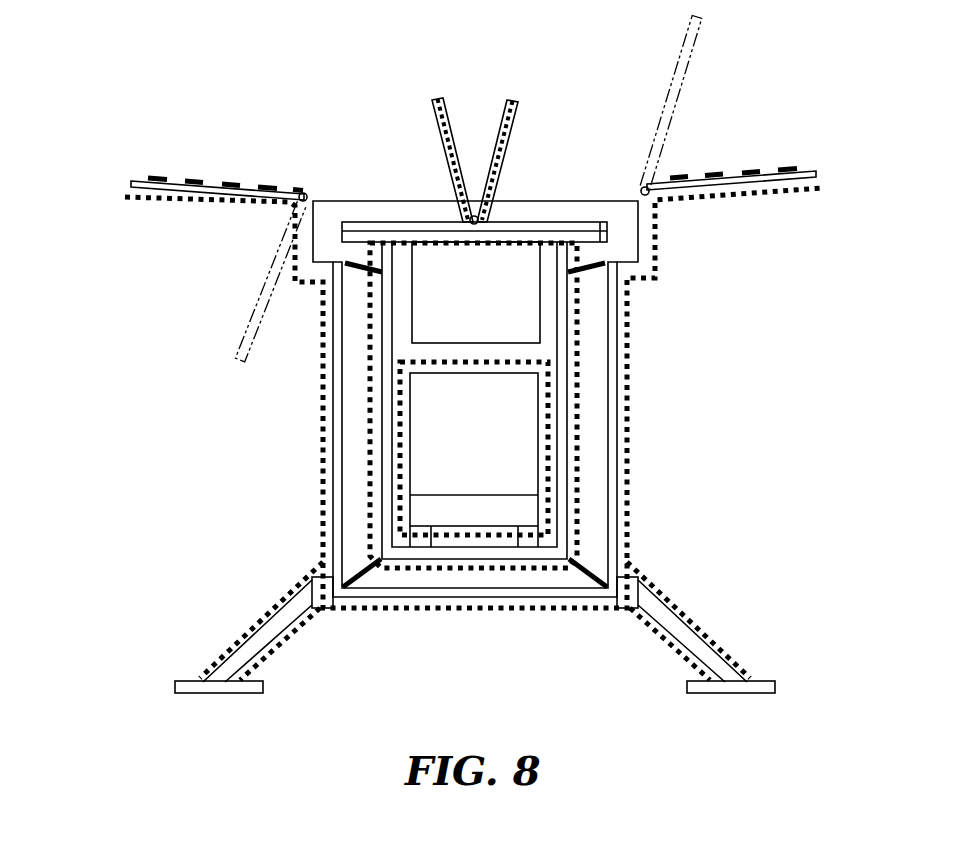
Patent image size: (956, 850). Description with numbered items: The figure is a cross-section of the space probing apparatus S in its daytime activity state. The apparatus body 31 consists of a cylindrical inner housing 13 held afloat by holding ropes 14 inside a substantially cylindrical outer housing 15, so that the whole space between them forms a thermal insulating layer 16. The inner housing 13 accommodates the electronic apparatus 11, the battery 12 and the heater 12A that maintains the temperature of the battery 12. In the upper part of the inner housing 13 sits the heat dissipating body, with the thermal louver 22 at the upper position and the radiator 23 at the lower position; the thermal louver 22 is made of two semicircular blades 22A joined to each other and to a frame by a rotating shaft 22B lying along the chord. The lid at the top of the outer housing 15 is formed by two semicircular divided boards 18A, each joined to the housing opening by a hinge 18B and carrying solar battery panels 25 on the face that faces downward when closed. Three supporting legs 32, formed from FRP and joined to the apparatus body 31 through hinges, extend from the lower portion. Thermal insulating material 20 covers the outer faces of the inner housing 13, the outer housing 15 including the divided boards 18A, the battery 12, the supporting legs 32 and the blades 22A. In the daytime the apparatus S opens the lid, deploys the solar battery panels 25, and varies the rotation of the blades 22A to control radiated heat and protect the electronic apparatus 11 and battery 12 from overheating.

The electronic apparatus 11 is at (500, 303).
The battery 12 is at (494, 449).
The heater 12A is at (468, 515).
The inner housing 13 is at (563, 433).
The holding ropes 14 is at (360, 268).
The outer housing 15 is at (610, 468).
The thermal insulating layer 16 is at (355, 367).
The divided board 18A is at (132, 184).
The hinge 18B is at (303, 193).
The thermal insulating material 20 is at (187, 201).
The thermal louver 22 is at (540, 223).
The blade 22A is at (440, 122).
The rotating shaft 22B is at (467, 220).
The radiator 23 is at (607, 237).
The solar battery panels 25 is at (200, 178).
The apparatus body 31 is at (625, 395).
The supporting legs 32 is at (257, 640).
The space probing apparatus S is at (692, 120).